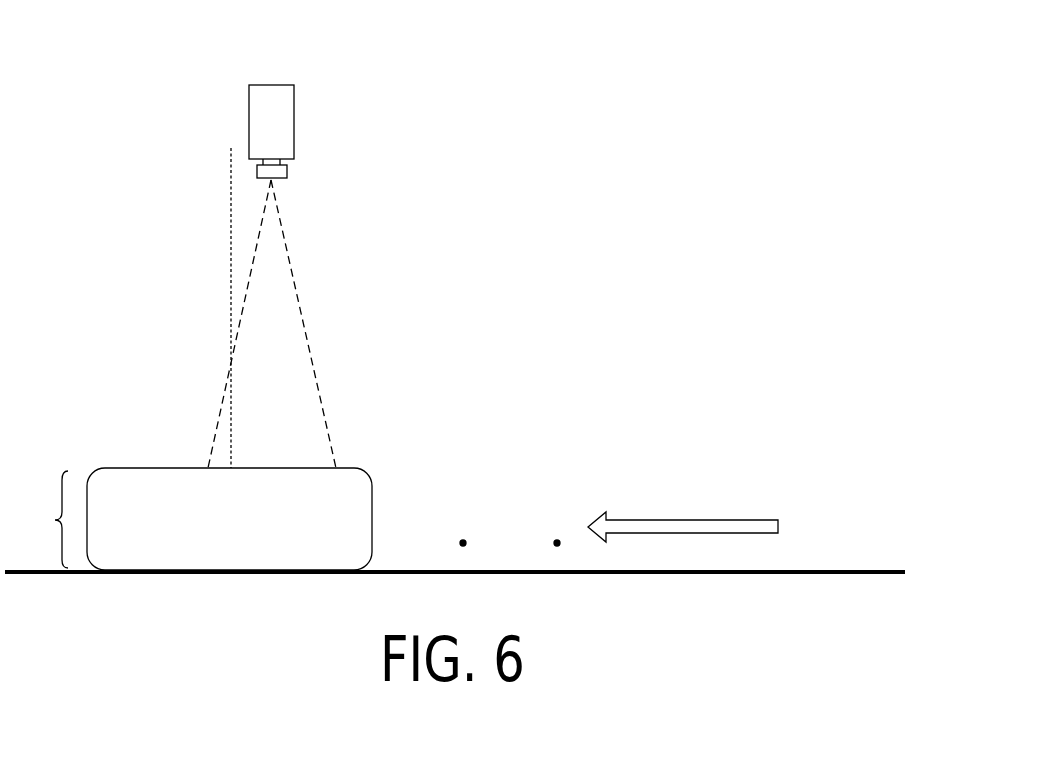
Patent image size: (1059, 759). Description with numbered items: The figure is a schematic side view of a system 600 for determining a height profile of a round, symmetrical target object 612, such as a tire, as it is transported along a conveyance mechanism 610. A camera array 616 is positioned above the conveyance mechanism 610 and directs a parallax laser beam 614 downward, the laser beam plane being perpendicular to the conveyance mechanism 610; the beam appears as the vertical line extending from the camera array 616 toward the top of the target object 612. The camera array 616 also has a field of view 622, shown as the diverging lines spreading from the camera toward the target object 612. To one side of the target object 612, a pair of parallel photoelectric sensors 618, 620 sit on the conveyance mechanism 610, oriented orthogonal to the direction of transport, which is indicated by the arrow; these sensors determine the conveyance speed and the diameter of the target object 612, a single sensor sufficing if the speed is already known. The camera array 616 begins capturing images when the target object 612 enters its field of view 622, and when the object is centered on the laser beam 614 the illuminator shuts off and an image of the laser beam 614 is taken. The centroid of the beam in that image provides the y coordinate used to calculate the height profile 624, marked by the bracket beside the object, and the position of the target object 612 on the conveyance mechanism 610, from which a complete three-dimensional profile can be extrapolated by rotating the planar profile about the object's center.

The system 600 is at (682, 128).
The conveyance mechanism 610 is at (857, 570).
The target object 612 is at (372, 508).
The parallax laser beam 614 is at (229, 233).
The camera array 616 is at (294, 120).
The photoelectric sensor 618 is at (463, 540).
The photoelectric sensor 620 is at (557, 540).
The field of view 622 is at (302, 316).
The height profile 624 is at (41, 519).